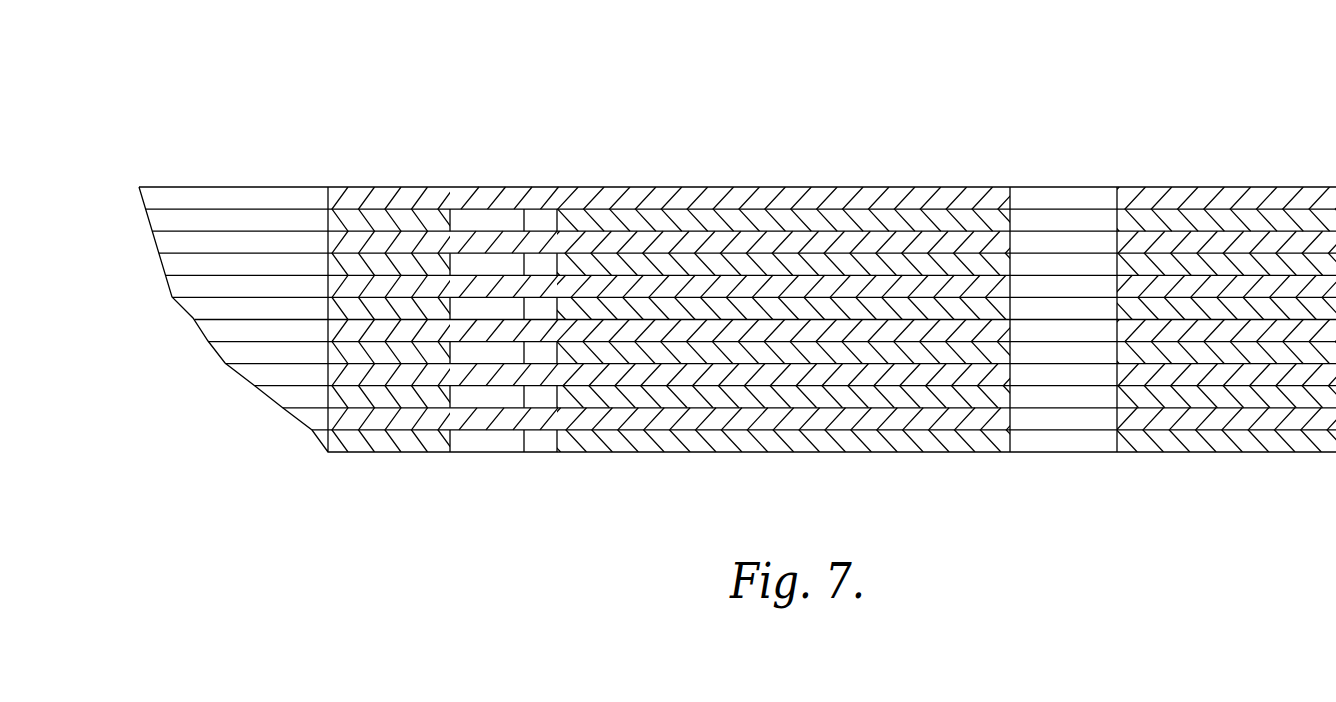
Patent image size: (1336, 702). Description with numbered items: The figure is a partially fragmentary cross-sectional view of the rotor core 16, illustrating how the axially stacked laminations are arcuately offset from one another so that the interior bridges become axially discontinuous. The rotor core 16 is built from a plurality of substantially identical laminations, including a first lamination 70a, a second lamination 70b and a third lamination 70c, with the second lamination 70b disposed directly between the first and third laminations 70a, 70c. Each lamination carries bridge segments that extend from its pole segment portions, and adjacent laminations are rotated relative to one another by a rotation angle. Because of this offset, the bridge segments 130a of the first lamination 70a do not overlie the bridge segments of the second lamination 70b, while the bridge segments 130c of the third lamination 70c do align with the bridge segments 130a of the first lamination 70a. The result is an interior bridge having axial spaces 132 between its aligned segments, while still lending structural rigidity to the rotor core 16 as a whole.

The rotor core 16 is at (1166, 90).
The first lamination 70a is at (181, 198).
The second lamination 70b is at (168, 220).
The third lamination 70c is at (176, 242).
The bridge segments of the first lamination 130a is at (502, 200).
The bridge segments of the third lamination 130c is at (468, 240).
The axial spaces 132 is at (512, 258).